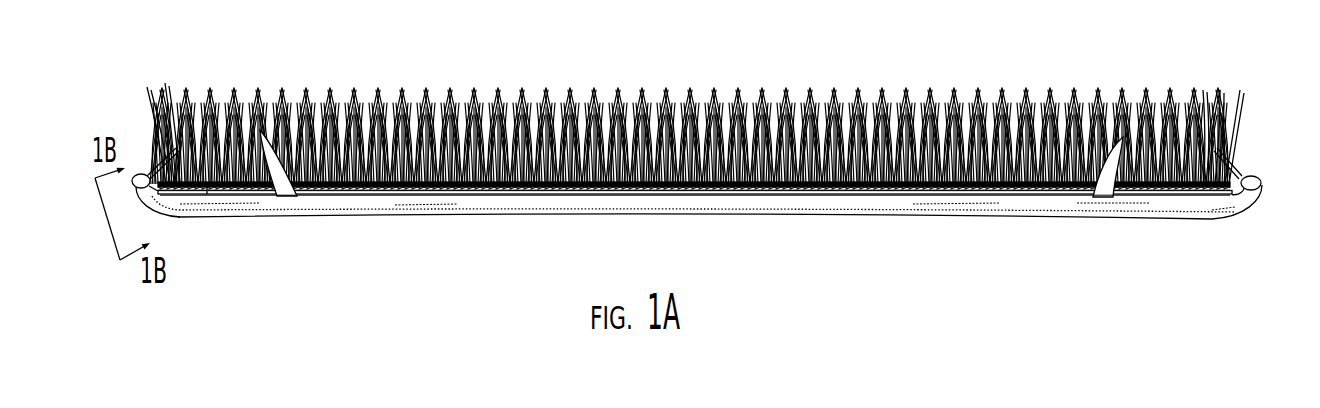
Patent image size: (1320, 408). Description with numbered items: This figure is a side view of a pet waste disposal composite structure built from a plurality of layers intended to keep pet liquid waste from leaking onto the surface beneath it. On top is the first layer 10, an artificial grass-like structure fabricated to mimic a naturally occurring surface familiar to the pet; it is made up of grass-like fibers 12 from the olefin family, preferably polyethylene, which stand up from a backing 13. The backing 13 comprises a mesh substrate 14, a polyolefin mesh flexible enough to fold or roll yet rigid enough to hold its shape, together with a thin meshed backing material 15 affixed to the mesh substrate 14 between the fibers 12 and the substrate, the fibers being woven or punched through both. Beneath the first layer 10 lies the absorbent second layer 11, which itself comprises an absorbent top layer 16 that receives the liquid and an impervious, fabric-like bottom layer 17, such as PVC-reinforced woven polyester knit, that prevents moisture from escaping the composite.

The first layer 10 is at (703, 190).
The second layer 11 is at (995, 203).
The grass-like fibers 12 is at (225, 93).
The backing 13 is at (1170, 207).
The mesh substrate 14 is at (492, 190).
The meshed backing material 15 is at (765, 187).
The top layer 16 is at (175, 150).
The bottom layer 17 is at (707, 217).